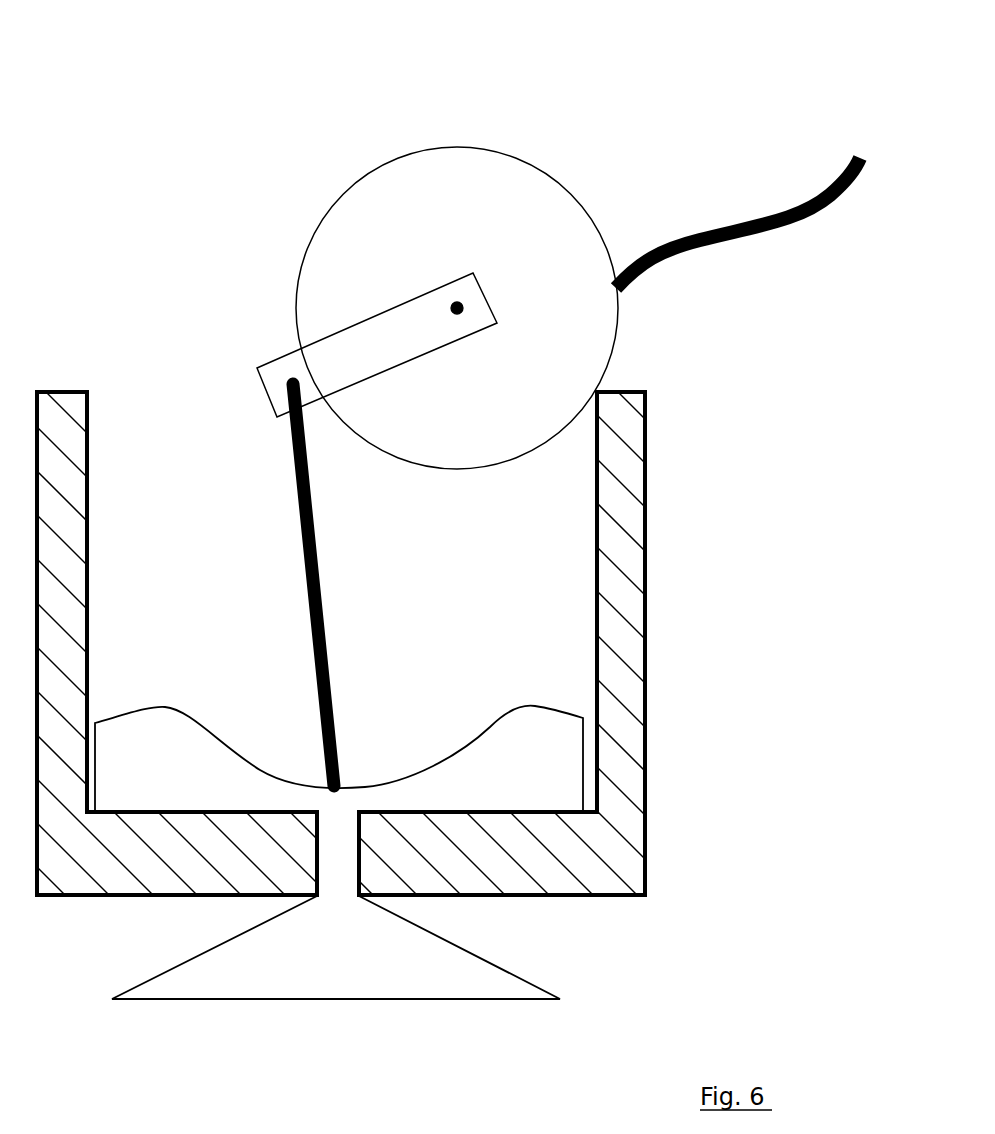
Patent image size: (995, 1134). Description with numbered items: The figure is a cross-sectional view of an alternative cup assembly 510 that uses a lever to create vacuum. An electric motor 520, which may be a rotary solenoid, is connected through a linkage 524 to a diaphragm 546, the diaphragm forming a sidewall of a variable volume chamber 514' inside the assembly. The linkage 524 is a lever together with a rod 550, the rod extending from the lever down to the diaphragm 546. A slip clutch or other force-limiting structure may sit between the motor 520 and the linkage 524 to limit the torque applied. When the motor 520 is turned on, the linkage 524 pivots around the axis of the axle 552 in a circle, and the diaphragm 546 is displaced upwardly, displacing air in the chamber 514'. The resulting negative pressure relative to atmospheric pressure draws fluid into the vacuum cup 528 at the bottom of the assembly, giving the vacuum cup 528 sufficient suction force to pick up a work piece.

The cup assembly 510 is at (722, 401).
The variable volume chamber 514' is at (648, 769).
The electric motor 520 is at (463, 147).
The linkage 524 is at (295, 348).
The vacuum cup 528 is at (520, 977).
The diaphragm 546 is at (185, 717).
The rod 550 is at (300, 498).
The axle 552 is at (460, 305).